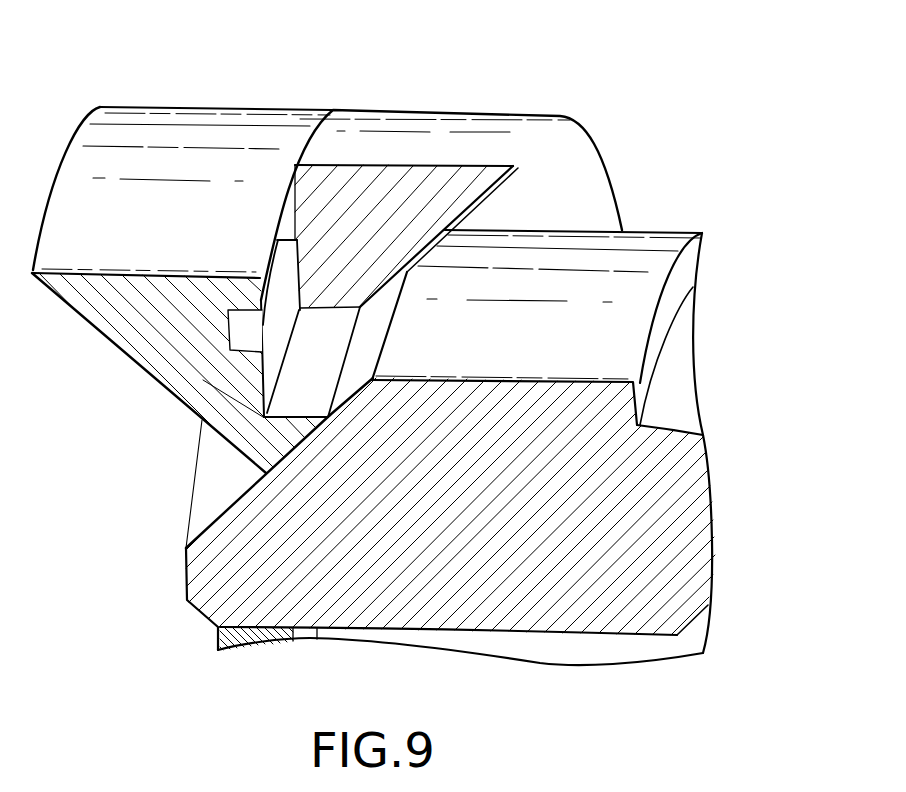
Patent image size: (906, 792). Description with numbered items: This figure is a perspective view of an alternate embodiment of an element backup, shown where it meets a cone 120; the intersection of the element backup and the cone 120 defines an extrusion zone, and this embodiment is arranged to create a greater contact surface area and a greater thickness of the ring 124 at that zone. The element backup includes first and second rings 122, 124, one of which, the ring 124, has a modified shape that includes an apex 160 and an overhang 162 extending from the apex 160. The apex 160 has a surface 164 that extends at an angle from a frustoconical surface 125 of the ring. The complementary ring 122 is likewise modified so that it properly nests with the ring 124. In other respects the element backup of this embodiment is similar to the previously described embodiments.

The cone 120 is at (630, 460).
The second ring 122 is at (458, 137).
The first ring 124 is at (147, 137).
The frustoconical surface 125 is at (133, 367).
The apex 160 is at (260, 472).
The overhang 162 is at (287, 428).
The surface 164 is at (311, 564).